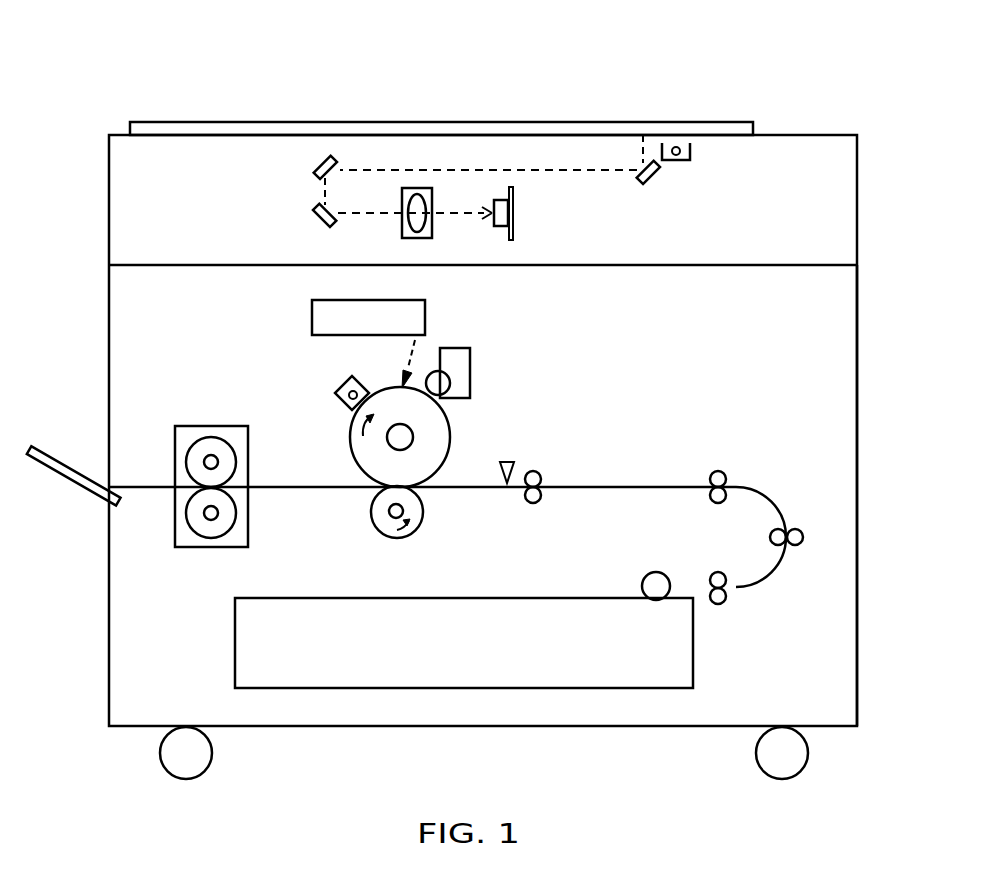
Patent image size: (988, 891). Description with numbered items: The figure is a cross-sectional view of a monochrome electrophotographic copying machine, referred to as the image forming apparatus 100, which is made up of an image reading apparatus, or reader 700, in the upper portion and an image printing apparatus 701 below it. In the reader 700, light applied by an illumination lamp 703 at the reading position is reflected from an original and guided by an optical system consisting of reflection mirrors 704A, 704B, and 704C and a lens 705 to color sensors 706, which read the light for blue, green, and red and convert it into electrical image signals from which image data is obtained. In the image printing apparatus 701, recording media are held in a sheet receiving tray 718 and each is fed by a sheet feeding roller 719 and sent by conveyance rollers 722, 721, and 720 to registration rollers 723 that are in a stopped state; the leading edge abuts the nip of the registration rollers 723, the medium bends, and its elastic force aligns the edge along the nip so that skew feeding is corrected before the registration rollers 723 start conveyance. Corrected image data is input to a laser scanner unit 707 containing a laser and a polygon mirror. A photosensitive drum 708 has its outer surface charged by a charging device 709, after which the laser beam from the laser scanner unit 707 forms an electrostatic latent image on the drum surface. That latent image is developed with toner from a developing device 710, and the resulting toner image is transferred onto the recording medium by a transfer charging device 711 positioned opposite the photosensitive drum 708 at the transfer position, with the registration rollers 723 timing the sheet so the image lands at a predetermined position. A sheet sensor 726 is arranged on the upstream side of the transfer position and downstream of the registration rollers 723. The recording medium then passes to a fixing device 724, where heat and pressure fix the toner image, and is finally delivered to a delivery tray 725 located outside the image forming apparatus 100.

The image forming apparatus 100 is at (618, 50).
The image reading apparatus 700 is at (858, 158).
The image printing apparatus 701 is at (858, 316).
The illumination lamp 703 is at (692, 153).
The reflection mirror 704A is at (662, 184).
The reflection mirror 704B is at (312, 168).
The reflection mirror 704C is at (312, 218).
The lens 705 is at (428, 238).
The color sensors 706 is at (516, 213).
The laser scanner unit 707 is at (312, 310).
The photosensitive drum 708 is at (350, 443).
The charging device 709 is at (336, 388).
The developing device 710 is at (458, 348).
The transfer charging device 711 is at (423, 518).
The sheet receiving tray 718 is at (235, 626).
The sheet feeding roller 719 is at (642, 580).
The conveyance rollers 720 is at (710, 476).
The conveyance rollers 721 is at (798, 533).
The conveyance rollers 722 is at (728, 600).
The registration rollers 723 is at (542, 497).
The fixing device 724 is at (249, 528).
The delivery tray 725 is at (42, 450).
The sheet sensor 726 is at (507, 460).